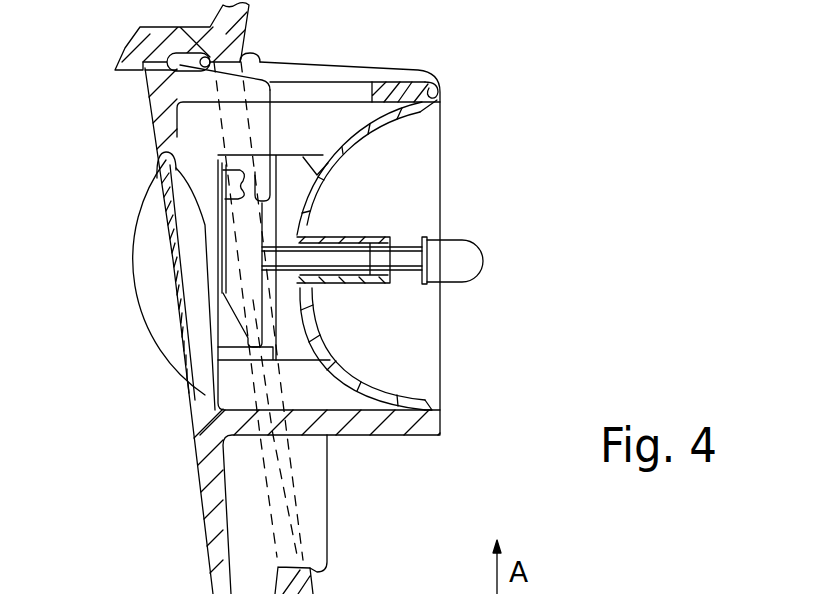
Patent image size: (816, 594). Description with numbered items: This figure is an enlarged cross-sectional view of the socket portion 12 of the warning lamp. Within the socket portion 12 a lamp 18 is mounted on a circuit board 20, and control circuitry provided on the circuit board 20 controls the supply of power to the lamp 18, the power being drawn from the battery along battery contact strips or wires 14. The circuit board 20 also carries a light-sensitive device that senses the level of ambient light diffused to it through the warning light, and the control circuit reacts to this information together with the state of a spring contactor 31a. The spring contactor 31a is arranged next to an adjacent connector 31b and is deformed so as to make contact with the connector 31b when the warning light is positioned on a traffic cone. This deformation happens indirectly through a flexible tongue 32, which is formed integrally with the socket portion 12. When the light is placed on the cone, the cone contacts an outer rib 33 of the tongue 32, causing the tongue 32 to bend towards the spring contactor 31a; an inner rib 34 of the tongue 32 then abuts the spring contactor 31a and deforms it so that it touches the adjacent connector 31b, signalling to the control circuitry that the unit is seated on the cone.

The socket portion 12 is at (532, 232).
The battery contact strips or wires 14 is at (142, 56).
The lamp 18 is at (482, 280).
The circuit board 20 is at (262, 222).
The spring contactor 31a is at (233, 297).
The connector 31b is at (300, 200).
The flexible tongue 32 is at (160, 223).
The outer rib 33 is at (133, 270).
The inner rib 34 is at (172, 155).